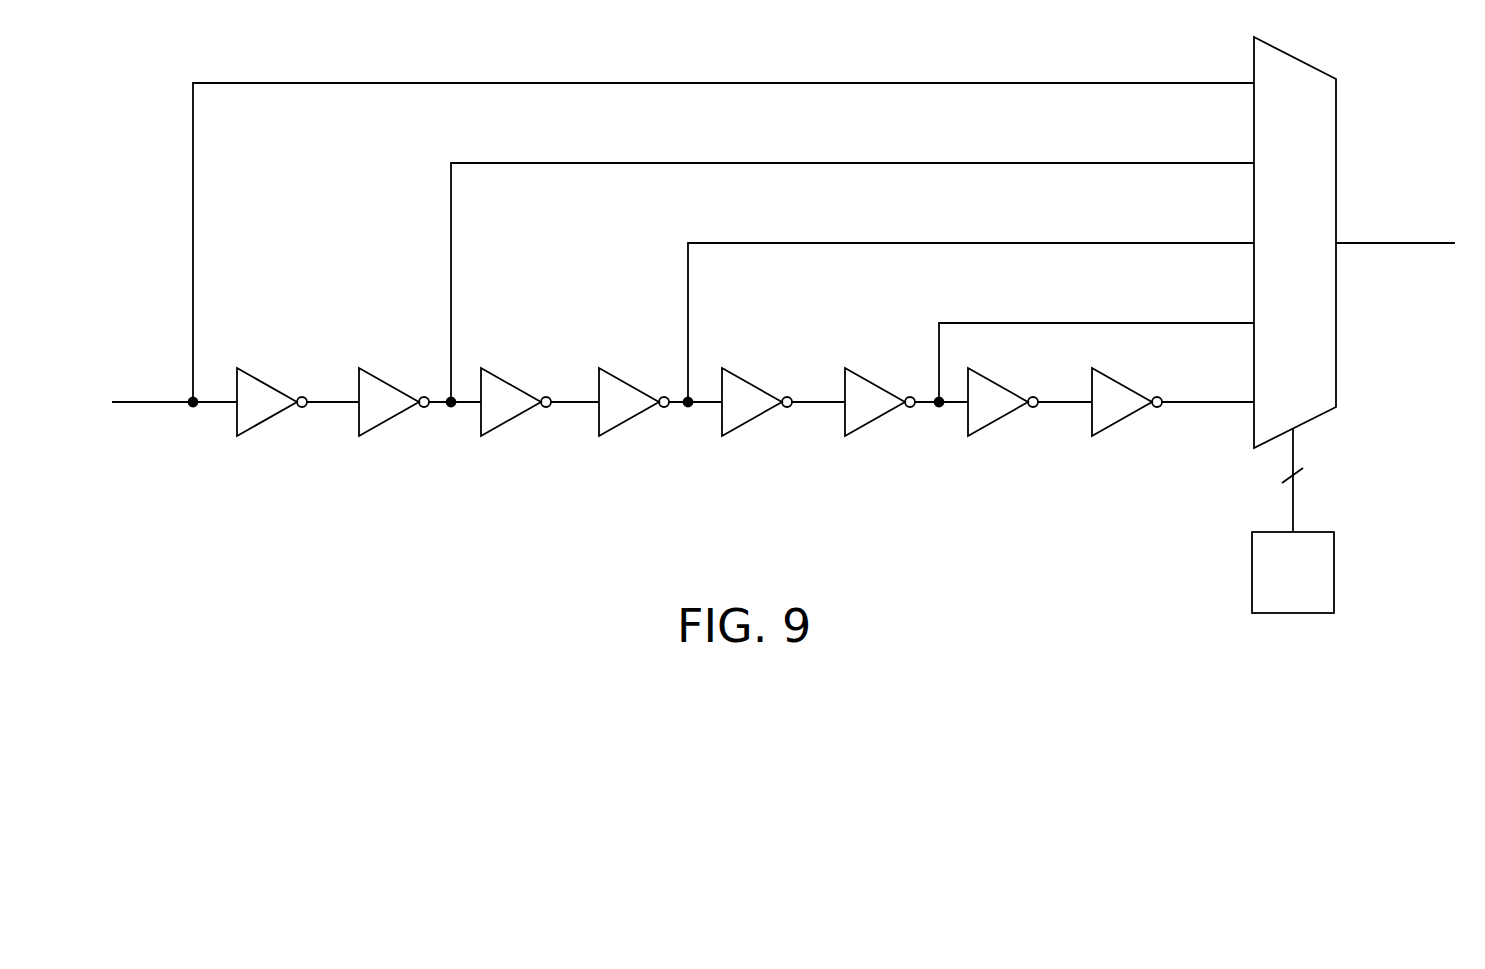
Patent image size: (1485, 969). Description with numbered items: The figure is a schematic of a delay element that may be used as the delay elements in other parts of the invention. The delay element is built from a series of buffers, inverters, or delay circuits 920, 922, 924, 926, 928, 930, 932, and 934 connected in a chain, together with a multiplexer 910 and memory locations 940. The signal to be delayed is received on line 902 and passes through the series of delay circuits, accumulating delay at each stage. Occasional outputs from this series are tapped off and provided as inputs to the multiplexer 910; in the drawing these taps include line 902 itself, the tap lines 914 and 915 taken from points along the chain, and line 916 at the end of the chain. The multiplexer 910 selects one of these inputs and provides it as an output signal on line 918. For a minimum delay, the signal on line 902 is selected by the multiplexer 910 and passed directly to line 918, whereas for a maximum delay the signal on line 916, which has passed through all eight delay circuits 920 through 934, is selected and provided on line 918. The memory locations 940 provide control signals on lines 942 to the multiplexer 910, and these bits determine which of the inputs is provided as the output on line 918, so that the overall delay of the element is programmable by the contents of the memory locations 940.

The line 902 is at (143, 404).
The multiplexer 910 is at (1295, 55).
The delayed signal tap 914 is at (1178, 165).
The delayed signal tap 915 is at (1125, 322).
The line 916 is at (1173, 400).
The line 918 is at (1389, 245).
The delay circuit 920 is at (262, 422).
The delay circuit 922 is at (384, 422).
The delay circuit 924 is at (506, 422).
The delay circuit 926 is at (624, 422).
The delay circuit 928 is at (747, 422).
The delay circuit 930 is at (870, 422).
The delay circuit 932 is at (993, 422).
The delay circuit 934 is at (1117, 422).
The memory locations 940 is at (1335, 570).
The lines 942 is at (1294, 516).